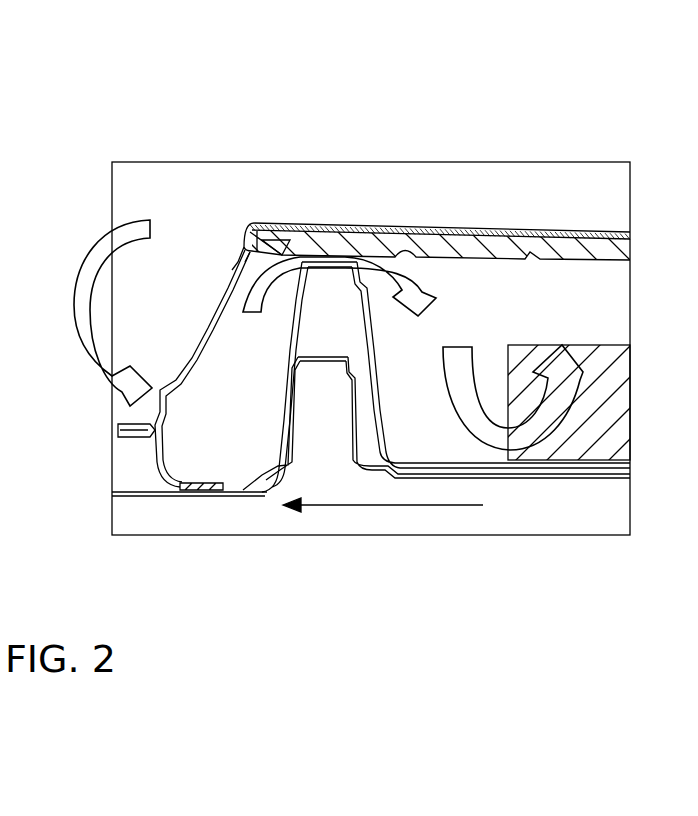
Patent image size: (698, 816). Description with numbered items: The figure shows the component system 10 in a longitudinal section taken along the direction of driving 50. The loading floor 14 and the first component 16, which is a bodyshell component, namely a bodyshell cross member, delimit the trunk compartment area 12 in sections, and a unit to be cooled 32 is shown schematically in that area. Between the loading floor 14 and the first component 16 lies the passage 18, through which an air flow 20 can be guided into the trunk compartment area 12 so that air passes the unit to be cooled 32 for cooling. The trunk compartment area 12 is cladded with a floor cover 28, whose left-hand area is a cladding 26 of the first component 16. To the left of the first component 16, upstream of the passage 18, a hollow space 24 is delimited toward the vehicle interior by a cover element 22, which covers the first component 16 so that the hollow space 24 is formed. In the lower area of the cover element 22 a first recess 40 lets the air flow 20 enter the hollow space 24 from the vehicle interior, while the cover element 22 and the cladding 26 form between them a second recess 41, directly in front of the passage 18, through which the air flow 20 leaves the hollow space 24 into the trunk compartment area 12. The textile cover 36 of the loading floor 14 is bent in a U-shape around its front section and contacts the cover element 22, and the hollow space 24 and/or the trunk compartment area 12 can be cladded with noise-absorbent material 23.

The component system 10 is at (538, 153).
The trunk compartment area 12 is at (468, 318).
The loading floor 14 is at (617, 251).
The first component 16 is at (318, 305).
The passage 18 is at (337, 256).
The air flow 20 is at (95, 253).
The cover element 22 is at (237, 268).
The noise-absorbent material 23 is at (208, 328).
The hollow space 24 is at (208, 408).
The cladding 26 is at (297, 298).
The floor cover 28 is at (375, 355).
The unit to be cooled 32 is at (617, 427).
The textile cover 36 is at (596, 237).
The first recess 40 is at (157, 390).
The second recess 41 is at (282, 255).
The direction of driving 50 is at (383, 505).